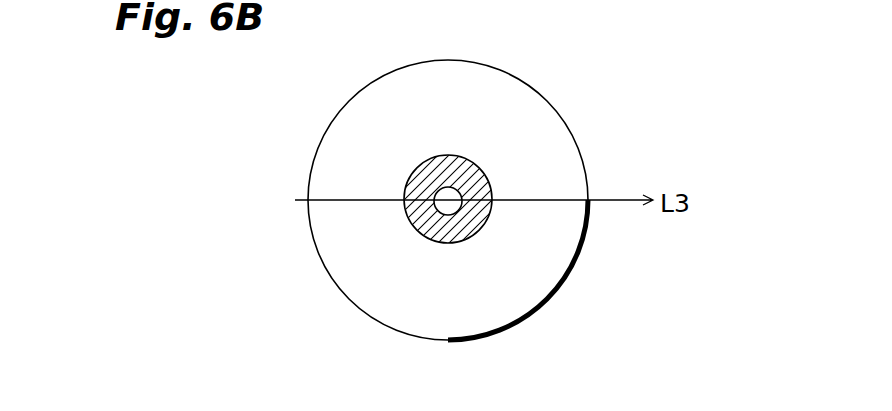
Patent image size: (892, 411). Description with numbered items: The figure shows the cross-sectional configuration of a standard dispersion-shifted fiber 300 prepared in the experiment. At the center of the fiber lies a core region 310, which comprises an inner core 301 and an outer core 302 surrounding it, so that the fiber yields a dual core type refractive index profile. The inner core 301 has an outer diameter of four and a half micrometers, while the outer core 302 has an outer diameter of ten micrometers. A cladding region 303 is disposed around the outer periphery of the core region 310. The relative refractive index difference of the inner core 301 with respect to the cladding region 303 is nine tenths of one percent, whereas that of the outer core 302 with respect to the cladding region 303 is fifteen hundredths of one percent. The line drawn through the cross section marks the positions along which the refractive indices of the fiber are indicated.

The dispersion-shifted fiber 300 is at (607, 178).
The inner core 301 is at (443, 202).
The outer core 302 is at (437, 232).
The cladding region 303 is at (563, 262).
The core region 310 is at (328, 254).